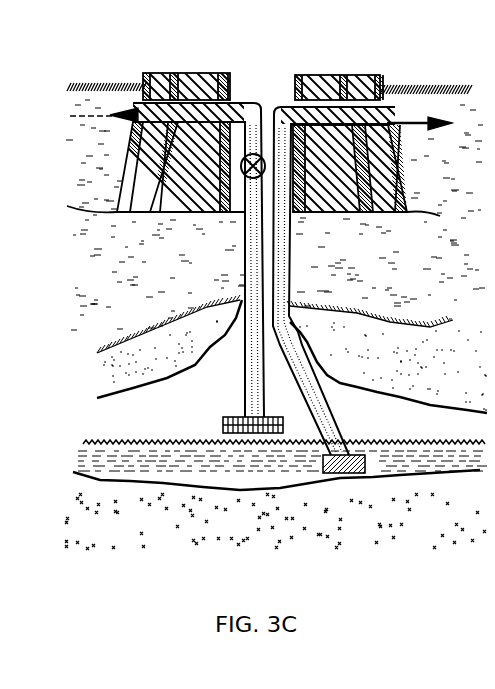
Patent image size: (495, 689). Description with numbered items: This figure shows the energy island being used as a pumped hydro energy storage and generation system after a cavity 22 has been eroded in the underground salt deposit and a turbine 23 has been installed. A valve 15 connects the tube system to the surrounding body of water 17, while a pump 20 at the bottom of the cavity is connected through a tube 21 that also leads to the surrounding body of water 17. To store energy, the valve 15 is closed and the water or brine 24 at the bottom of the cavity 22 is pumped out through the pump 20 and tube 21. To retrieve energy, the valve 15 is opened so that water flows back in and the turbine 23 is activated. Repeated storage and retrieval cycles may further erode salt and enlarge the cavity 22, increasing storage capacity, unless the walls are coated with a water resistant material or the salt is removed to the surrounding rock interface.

The valve 15 is at (243, 181).
The surrounding body of water 17 is at (427, 142).
The pump 20 is at (349, 453).
The tube 21 is at (312, 394).
The cavity 22 is at (292, 355).
The turbine 23 is at (244, 399).
The water or brine 24 is at (203, 466).